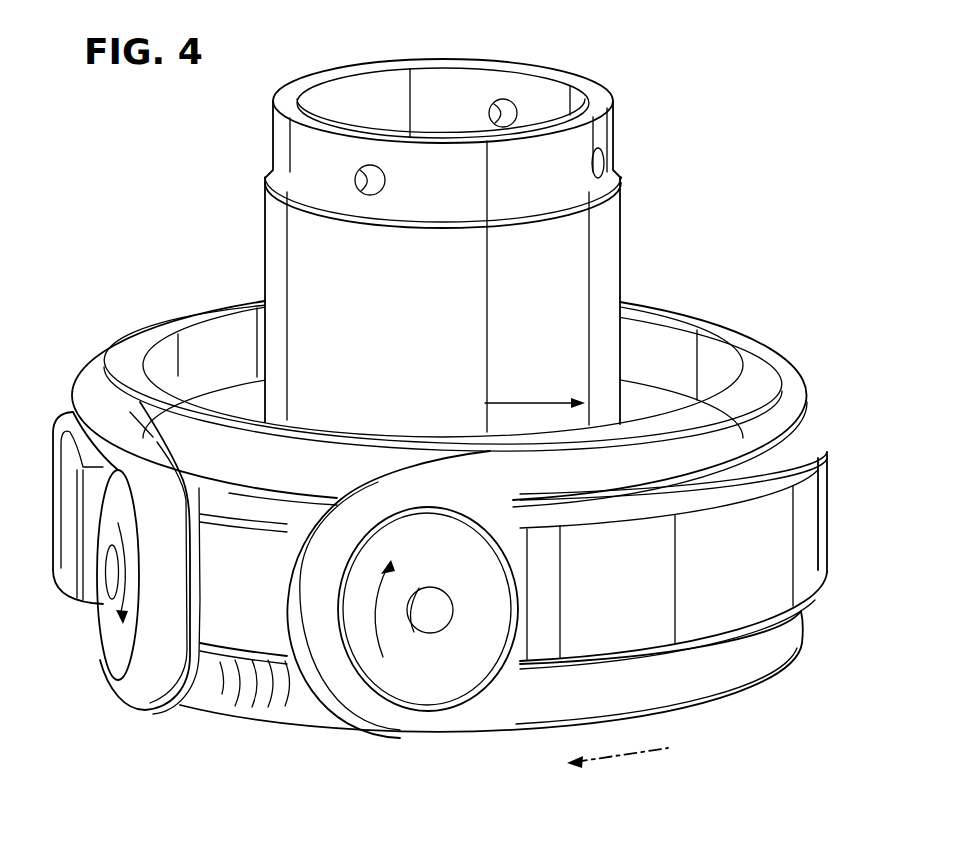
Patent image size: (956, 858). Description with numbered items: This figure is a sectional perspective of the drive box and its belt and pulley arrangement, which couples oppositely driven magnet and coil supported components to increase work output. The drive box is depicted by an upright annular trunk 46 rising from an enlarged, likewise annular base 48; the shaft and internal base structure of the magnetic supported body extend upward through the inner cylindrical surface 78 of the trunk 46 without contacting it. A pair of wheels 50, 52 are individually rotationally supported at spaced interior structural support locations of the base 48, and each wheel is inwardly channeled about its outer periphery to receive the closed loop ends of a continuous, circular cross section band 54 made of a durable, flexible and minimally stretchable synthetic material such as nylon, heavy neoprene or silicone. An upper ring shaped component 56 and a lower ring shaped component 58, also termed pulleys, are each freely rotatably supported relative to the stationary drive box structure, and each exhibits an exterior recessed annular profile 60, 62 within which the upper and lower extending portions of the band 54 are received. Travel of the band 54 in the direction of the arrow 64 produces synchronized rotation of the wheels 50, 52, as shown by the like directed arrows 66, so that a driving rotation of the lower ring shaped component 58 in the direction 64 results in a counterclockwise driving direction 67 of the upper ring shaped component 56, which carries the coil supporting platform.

The annular trunk 46 is at (271, 248).
The annular base 48 is at (225, 591).
The wheel 50 is at (110, 632).
The wheel 52 is at (410, 697).
The band 54 is at (540, 708).
The upper ring shaped component 56 is at (133, 340).
The lower ring shaped component 58 is at (288, 720).
The exterior recessed annular profile 60 is at (307, 457).
The exterior recessed annular profile 62 is at (222, 695).
The directional arrow 64 is at (630, 757).
The directional arrows 66 is at (123, 563).
The driving direction 67 is at (548, 400).
The inner cylindrical surface 78 is at (468, 88).